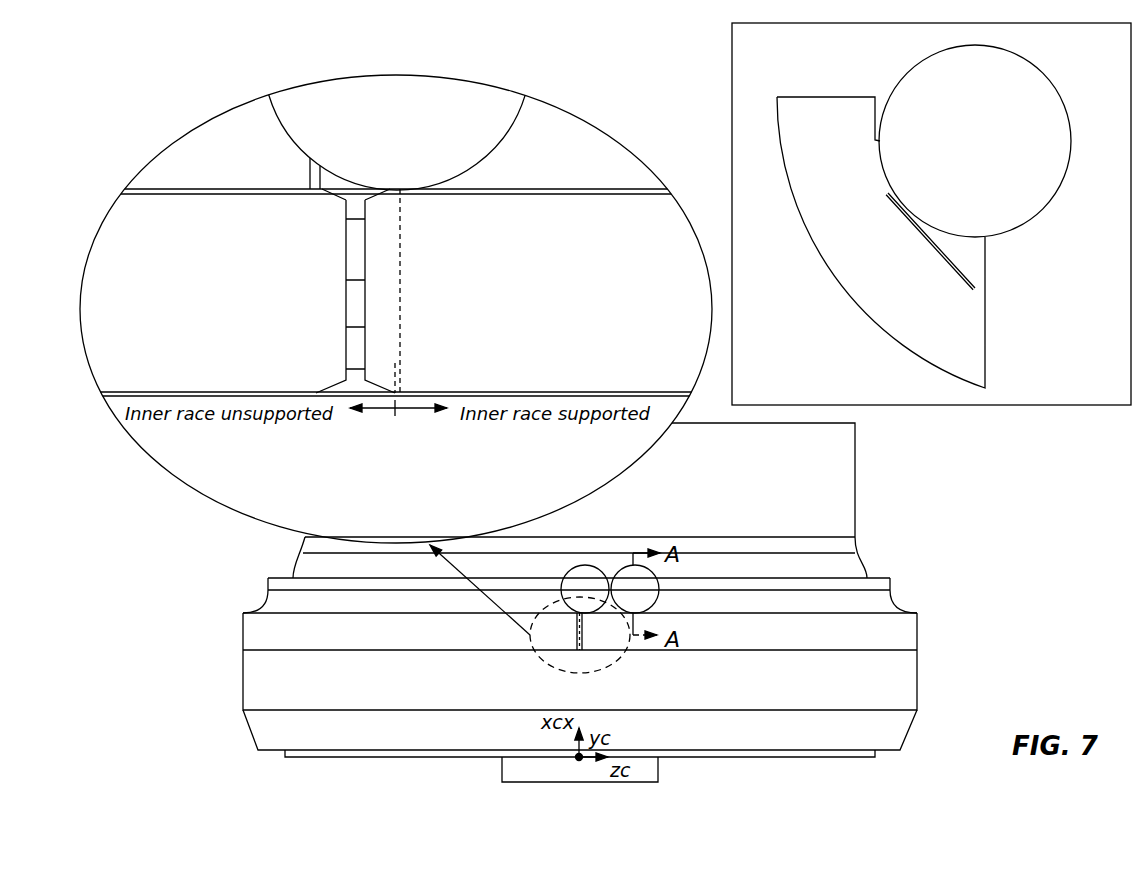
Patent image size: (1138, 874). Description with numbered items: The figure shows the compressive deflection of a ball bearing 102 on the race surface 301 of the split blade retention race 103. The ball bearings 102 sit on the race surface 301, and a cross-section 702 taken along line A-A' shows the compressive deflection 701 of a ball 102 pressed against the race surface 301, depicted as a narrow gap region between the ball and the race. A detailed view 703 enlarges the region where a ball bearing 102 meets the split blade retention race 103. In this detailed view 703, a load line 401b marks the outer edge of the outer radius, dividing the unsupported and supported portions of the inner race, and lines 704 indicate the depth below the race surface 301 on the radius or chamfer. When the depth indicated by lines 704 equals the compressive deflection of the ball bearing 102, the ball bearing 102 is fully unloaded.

The ball bearing 102 is at (630, 565).
The split blade retention race 103 is at (509, 434).
The race surface 301 is at (875, 163).
The load line 401b is at (410, 303).
The compressive deflection 701 is at (963, 268).
The cross-section 702 is at (931, 214).
The detailed view 703 is at (648, 452).
The lines indicating depth below the race surface 704 is at (502, 158).